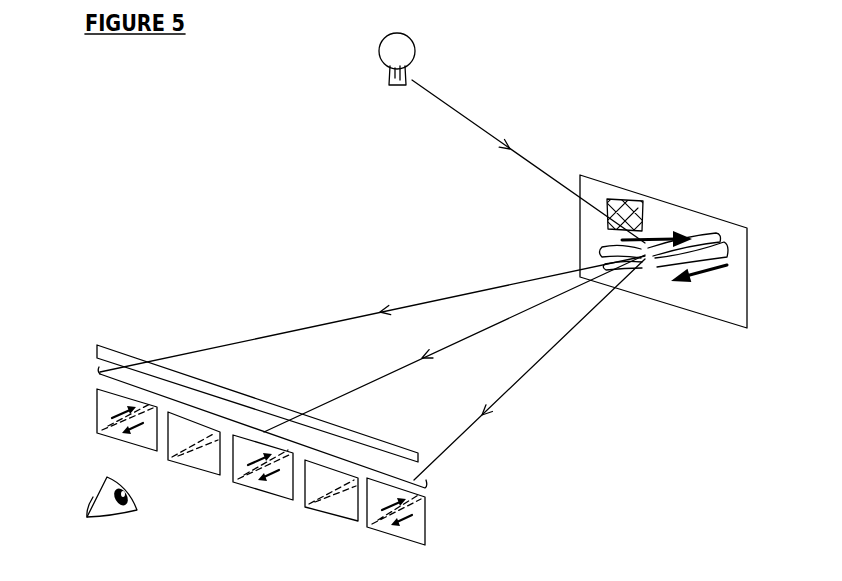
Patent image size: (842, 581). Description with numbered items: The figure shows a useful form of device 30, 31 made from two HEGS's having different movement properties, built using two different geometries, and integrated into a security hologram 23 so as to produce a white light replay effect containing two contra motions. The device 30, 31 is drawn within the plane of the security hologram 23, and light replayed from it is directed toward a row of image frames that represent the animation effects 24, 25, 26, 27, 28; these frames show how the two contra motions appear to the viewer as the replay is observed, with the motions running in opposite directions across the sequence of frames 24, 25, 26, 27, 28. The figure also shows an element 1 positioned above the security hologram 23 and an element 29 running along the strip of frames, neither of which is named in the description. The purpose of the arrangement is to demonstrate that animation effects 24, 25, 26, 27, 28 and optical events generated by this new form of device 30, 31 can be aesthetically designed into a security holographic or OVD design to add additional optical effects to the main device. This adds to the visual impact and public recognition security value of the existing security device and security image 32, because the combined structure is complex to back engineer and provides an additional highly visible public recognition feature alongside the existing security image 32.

The light source 1 is at (416, 57).
The security hologram 23 is at (747, 314).
The contra motion animation effect 24 is at (127, 429).
The contra motion animation effect 25 is at (194, 453).
The contra motion animation effect 26 is at (263, 475).
The contra motion animation effect 27 is at (331, 499).
The contra motion animation effect 28 is at (396, 519).
The elongated strip / bar 29 is at (113, 343).
The HEGS device 30 is at (731, 255).
The HEGS device 31 is at (694, 239).
The security image 32 is at (615, 199).